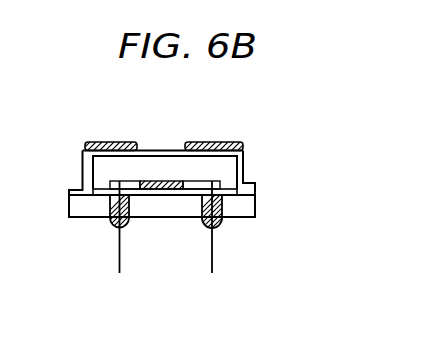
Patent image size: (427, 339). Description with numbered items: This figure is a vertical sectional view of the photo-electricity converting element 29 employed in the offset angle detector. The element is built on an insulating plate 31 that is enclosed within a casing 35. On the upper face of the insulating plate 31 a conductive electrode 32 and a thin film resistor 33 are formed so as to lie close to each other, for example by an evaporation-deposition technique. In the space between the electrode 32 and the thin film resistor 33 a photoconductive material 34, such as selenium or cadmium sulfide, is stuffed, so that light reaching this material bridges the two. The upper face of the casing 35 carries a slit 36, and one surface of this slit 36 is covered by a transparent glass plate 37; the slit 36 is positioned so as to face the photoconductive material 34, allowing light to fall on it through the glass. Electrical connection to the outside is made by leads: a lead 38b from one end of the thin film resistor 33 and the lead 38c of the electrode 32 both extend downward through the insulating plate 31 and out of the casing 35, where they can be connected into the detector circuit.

The photo-electricity converting element 29 is at (218, 143).
The insulating plate 31 is at (91, 211).
The conductive electrode 32 is at (198, 188).
The thin film resistor 33 is at (130, 224).
The photoconductive material 34 is at (160, 180).
The casing 35 is at (67, 189).
The slit 36 is at (102, 152).
The transparent glass plate 37 is at (87, 146).
The lead 38b is at (119, 250).
The lead 38c is at (213, 250).